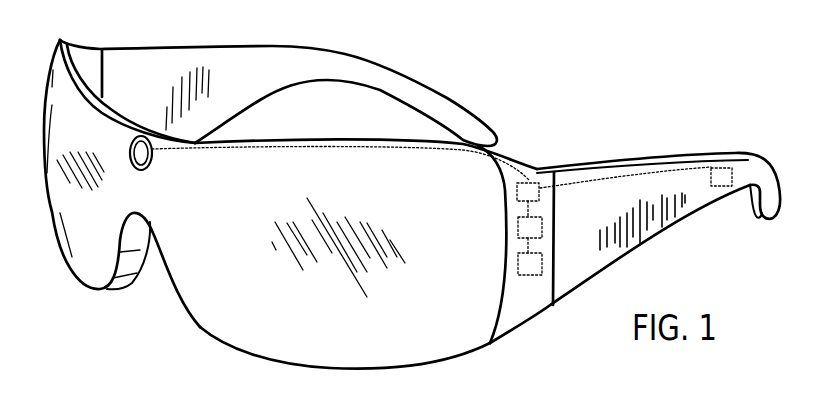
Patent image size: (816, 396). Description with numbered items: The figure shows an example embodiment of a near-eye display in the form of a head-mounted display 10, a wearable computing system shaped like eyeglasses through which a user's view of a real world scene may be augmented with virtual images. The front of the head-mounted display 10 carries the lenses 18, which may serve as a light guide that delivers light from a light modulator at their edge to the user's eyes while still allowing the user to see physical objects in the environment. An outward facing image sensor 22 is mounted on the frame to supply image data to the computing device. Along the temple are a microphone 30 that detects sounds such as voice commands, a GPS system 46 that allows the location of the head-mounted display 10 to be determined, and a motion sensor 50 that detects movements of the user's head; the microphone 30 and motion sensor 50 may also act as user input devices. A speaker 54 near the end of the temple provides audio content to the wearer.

The head-mounted display 10 is at (72, 326).
The lenses 18 is at (83, 265).
The outward facing image sensor 22 is at (152, 150).
The microphone 30 is at (534, 183).
The GPS system 46 is at (545, 208).
The motion sensor 50 is at (545, 248).
The speaker 54 is at (725, 168).